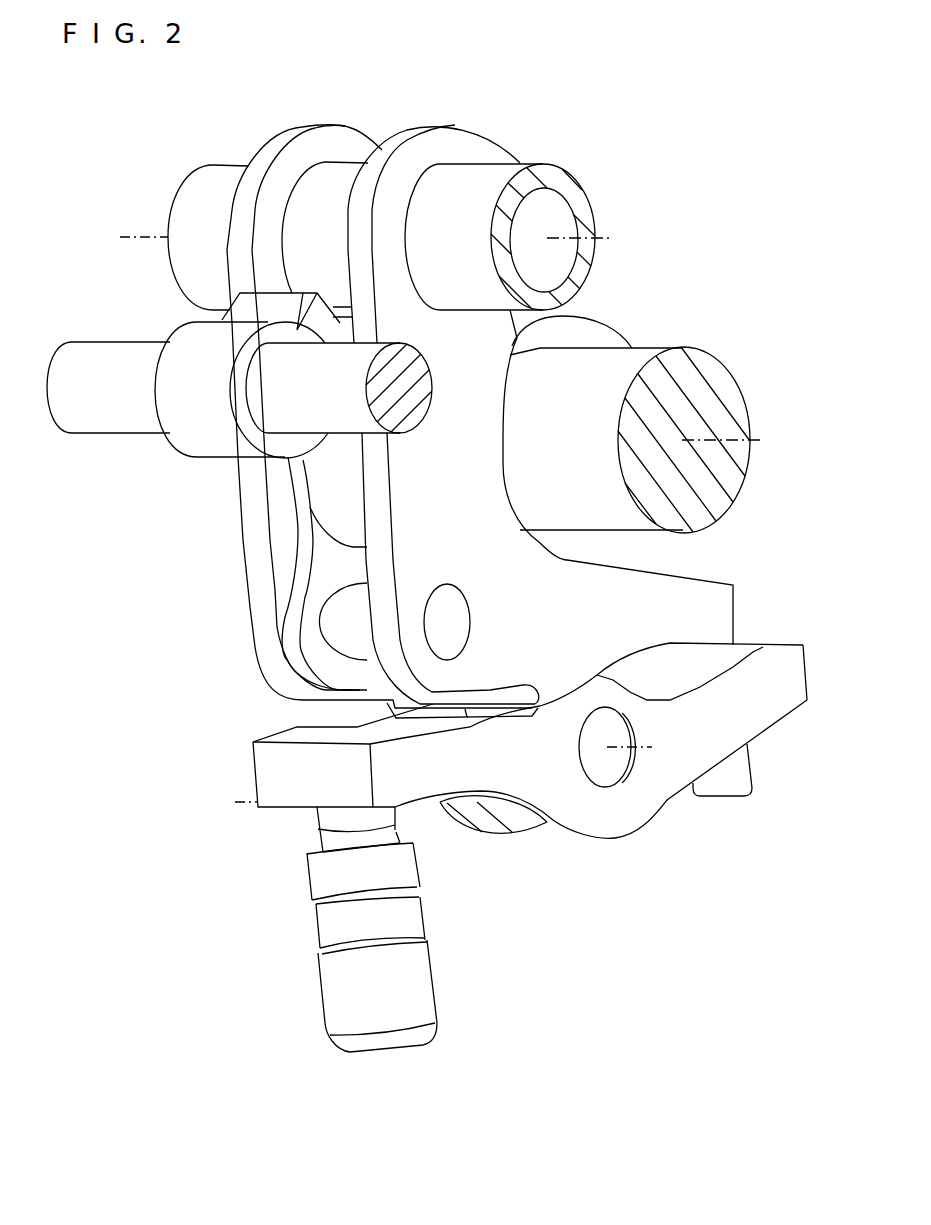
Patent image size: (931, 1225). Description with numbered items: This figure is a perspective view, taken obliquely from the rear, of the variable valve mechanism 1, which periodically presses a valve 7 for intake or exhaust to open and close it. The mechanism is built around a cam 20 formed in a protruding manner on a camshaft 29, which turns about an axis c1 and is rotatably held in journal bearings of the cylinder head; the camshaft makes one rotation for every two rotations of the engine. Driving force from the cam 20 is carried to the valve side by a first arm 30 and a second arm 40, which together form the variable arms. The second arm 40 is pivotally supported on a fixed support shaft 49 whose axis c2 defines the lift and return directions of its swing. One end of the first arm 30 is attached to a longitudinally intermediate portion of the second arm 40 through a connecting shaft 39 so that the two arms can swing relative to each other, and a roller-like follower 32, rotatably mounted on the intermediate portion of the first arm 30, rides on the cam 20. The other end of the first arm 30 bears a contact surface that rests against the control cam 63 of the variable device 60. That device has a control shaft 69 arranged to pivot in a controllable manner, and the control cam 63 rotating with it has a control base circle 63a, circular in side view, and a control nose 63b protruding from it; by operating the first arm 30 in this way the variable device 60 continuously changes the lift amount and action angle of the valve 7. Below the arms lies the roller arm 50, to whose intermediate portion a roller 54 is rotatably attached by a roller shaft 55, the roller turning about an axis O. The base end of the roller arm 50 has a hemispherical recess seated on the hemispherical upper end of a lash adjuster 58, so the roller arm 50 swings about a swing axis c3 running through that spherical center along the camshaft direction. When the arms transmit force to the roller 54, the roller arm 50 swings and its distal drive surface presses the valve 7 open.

The variable valve mechanism 1 is at (132, 163).
The variable device 60 is at (126, 323).
The control cam 63 is at (167, 367).
The control base circle 63a is at (165, 408).
The control nose 63b is at (295, 302).
The control shaft 69 is at (412, 362).
The support shaft 49 is at (558, 180).
The axis of the support shaft c2 is at (592, 240).
The cam 20 is at (603, 340).
The camshaft 29 is at (700, 362).
The axis of the camshaft c1 is at (736, 440).
The second arm 40 is at (258, 592).
The first arm 30 is at (307, 523).
The follower 32 is at (313, 478).
The connecting shaft 39 is at (463, 623).
The roller arm 50 is at (268, 753).
The swing axis c3 is at (234, 803).
The lash adjuster 58 is at (332, 974).
The valve 7 is at (737, 763).
The roller 54 is at (545, 823).
The roller shaft 55 is at (592, 765).
The axis of the roller O is at (639, 747).